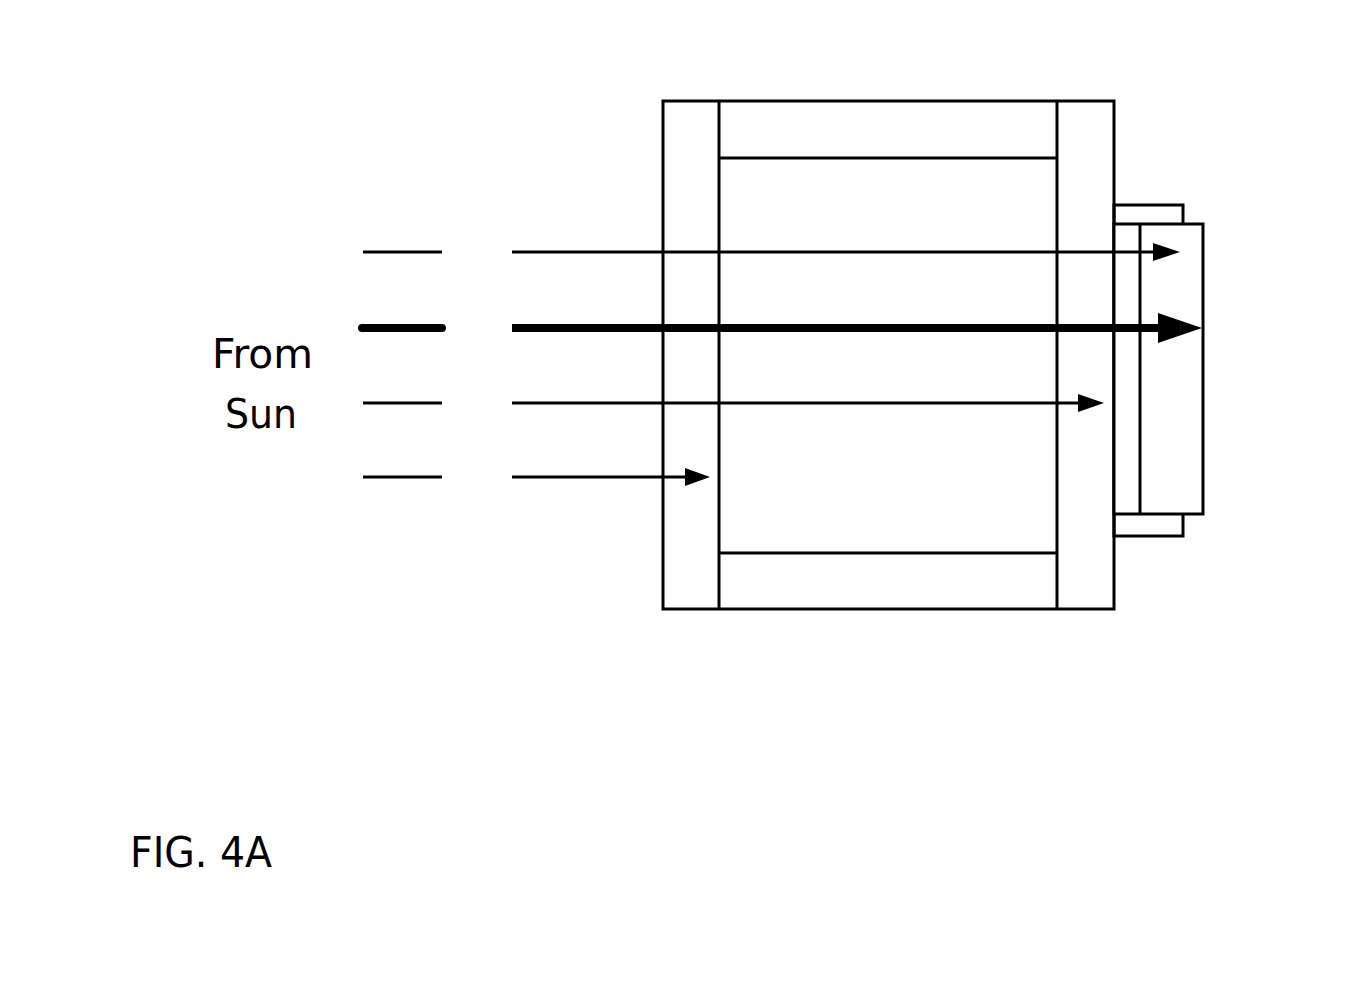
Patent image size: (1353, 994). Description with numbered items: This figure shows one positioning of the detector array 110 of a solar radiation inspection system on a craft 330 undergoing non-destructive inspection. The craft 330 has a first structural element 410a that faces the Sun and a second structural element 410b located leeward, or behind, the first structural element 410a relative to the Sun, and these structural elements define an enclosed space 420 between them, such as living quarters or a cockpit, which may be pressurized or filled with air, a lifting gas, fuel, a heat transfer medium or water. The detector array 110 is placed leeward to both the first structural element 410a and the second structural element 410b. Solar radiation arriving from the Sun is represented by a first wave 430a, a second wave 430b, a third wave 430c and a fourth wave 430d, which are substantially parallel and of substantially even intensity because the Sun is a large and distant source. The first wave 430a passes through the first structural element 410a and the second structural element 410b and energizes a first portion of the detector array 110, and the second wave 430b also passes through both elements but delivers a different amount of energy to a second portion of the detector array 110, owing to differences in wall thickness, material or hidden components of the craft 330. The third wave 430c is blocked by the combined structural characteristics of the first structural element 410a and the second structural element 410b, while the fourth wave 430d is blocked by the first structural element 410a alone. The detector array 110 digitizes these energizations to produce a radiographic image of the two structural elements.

The craft 330 is at (662, 112).
The first structural element 410a is at (682, 567).
The second structural element 410b is at (1095, 140).
The enclosed space 420 is at (868, 195).
The detector array 110 is at (1192, 350).
The first wave 430a is at (771, 252).
The second wave 430b is at (782, 328).
The third wave 430c is at (733, 403).
The fourth wave 430d is at (536, 477).